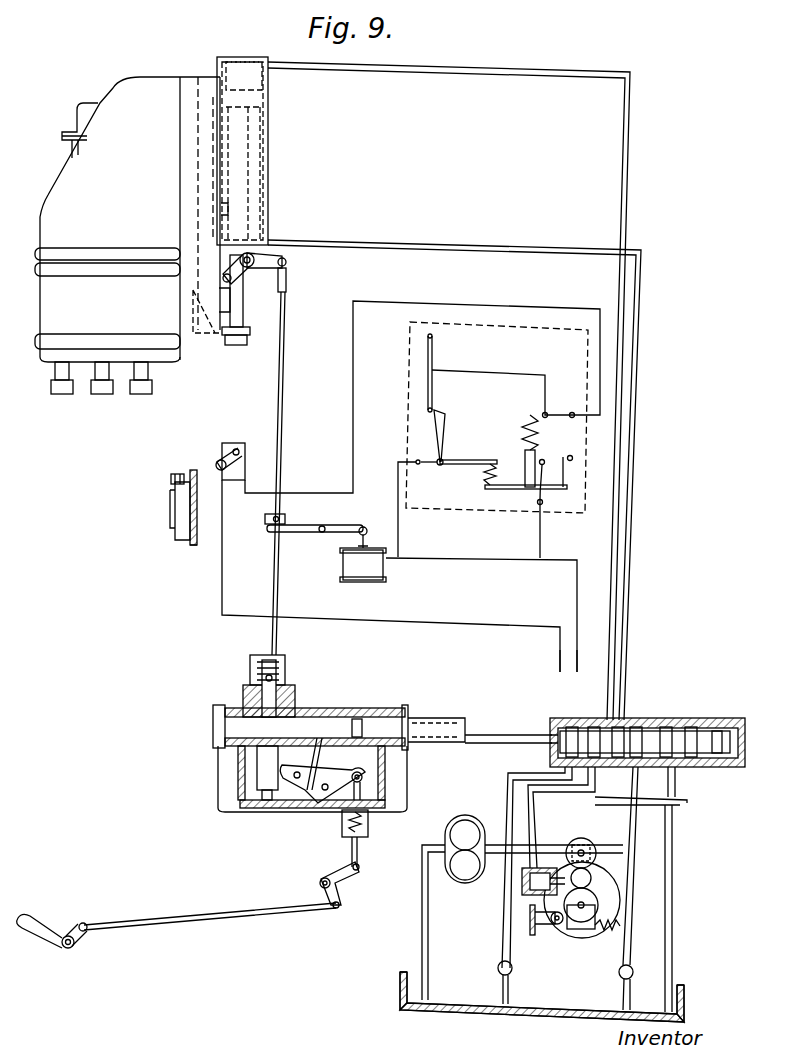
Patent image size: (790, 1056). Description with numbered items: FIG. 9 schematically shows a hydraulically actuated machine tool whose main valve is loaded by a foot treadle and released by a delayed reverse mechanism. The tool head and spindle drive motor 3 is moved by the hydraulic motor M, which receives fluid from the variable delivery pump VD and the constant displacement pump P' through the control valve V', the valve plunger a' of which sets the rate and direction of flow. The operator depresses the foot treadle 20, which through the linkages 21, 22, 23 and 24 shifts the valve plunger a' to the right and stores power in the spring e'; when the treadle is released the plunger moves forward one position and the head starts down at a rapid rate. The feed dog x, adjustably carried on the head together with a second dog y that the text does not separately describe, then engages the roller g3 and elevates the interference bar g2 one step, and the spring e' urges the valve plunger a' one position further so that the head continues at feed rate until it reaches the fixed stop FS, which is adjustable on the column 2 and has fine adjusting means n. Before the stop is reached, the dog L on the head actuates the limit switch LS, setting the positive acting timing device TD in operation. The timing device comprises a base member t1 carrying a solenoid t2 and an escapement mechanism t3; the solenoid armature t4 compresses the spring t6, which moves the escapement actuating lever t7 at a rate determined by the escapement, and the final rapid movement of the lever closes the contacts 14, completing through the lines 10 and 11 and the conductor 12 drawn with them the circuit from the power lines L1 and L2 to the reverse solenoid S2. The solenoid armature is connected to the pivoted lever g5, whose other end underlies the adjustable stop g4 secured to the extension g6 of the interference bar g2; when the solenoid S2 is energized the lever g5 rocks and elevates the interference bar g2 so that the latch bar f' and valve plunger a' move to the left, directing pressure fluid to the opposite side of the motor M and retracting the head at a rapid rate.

The tool head and spindle drive motor 3 is at (127, 235).
The hydraulic motor M is at (268, 140).
The feed dog x is at (218, 207).
The lower stop y is at (218, 295).
The dog L is at (232, 330).
The roller g3 is at (240, 275).
The extension of the interference bar g6 is at (278, 574).
The limit switch LS is at (245, 447).
The fixed stop FS is at (172, 497).
The adjusting means n is at (168, 478).
The upright column 2 is at (188, 538).
The adjustable stop g4 is at (285, 518).
The pivoted lever g5 is at (335, 525).
The reverse solenoid S2 is at (343, 570).
The timing device TD is at (410, 400).
The contacts 14 is at (432, 405).
The line 10 is at (566, 404).
The solenoid t2 is at (538, 432).
The armature t4 is at (522, 470).
The escapement mechanism t3 is at (448, 460).
The escapement actuating lever t7 is at (445, 465).
The spring t6 is at (486, 478).
The base member t1 is at (585, 452).
The line 11 is at (398, 478).
The conductor 12 is at (543, 505).
The interference bar g2 is at (295, 690).
The spring e' is at (315, 743).
The latch bar f' is at (429, 731).
The linkage 24 is at (330, 768).
The control valve V' is at (647, 726).
The valve plunger a' is at (645, 723).
The power line L1 is at (557, 645).
The power line L2 is at (580, 650).
The linkage 23 is at (350, 852).
The linkage 22 is at (318, 872).
The linkage 21 is at (226, 905).
The foot treadle 20 is at (50, 925).
The constant displacement pump P' is at (522, 890).
The variable delivery pump VD is at (612, 897).